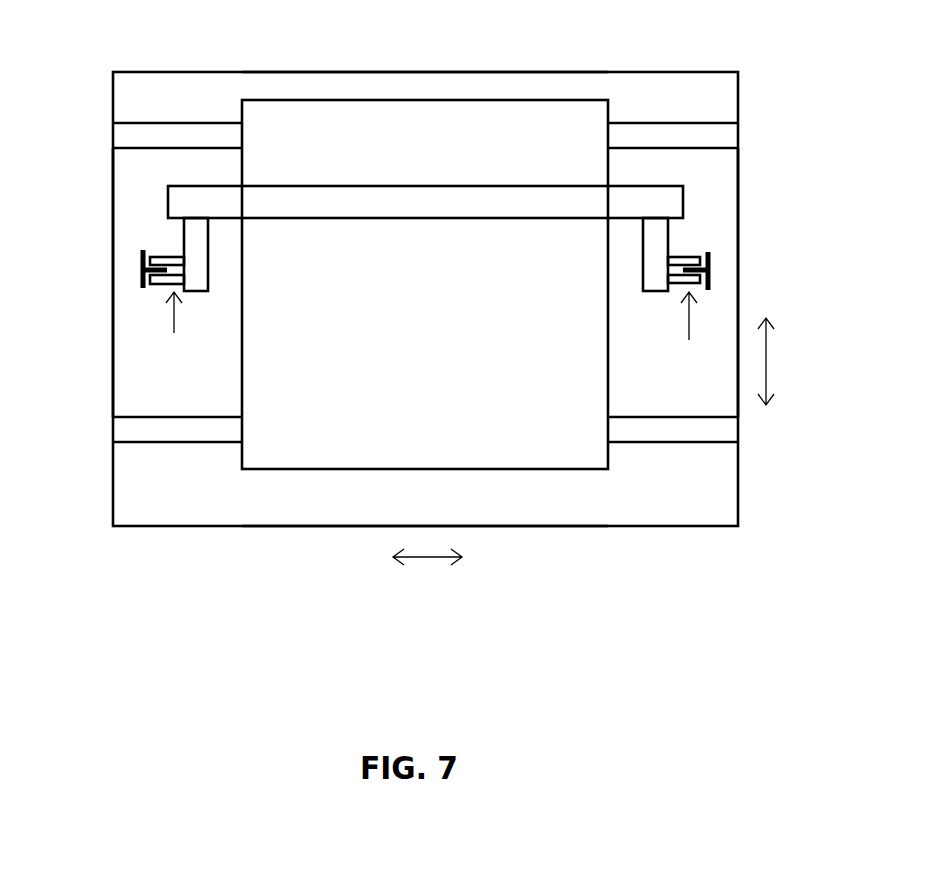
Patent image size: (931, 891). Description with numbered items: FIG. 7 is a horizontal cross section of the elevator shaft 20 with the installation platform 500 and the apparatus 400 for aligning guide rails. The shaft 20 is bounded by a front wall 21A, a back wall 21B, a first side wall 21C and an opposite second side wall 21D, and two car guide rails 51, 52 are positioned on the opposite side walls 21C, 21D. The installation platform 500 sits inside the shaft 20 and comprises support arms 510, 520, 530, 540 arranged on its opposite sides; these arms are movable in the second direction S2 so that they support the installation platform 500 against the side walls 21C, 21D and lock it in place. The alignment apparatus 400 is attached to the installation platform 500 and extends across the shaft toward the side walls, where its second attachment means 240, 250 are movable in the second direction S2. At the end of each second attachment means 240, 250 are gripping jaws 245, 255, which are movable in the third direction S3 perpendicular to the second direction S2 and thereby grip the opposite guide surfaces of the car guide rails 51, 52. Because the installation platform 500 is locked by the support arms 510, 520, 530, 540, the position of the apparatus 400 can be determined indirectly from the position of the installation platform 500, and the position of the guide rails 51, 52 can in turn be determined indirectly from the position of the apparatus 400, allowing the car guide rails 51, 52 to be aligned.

The elevator shaft 20 is at (439, 512).
The installation platform 500 is at (440, 436).
The apparatus for aligning guide rails 400 is at (431, 195).
The second attachment means 250 is at (208, 249).
The second attachment means 240 is at (655, 249).
The jaw 255 is at (175, 333).
The jaw 245 is at (689, 334).
The car guide rail 51 is at (140, 264).
The car guide rail 52 is at (712, 264).
The support arm 510 is at (120, 428).
The support arm 520 is at (120, 134).
The support arm 530 is at (732, 429).
The support arm 540 is at (732, 135).
The front wall 21A is at (608, 526).
The back wall 21B is at (606, 72).
The first side wall 21C is at (110, 194).
The second side wall 21D is at (740, 200).
The second direction S2 is at (428, 559).
The third direction S3 is at (768, 362).